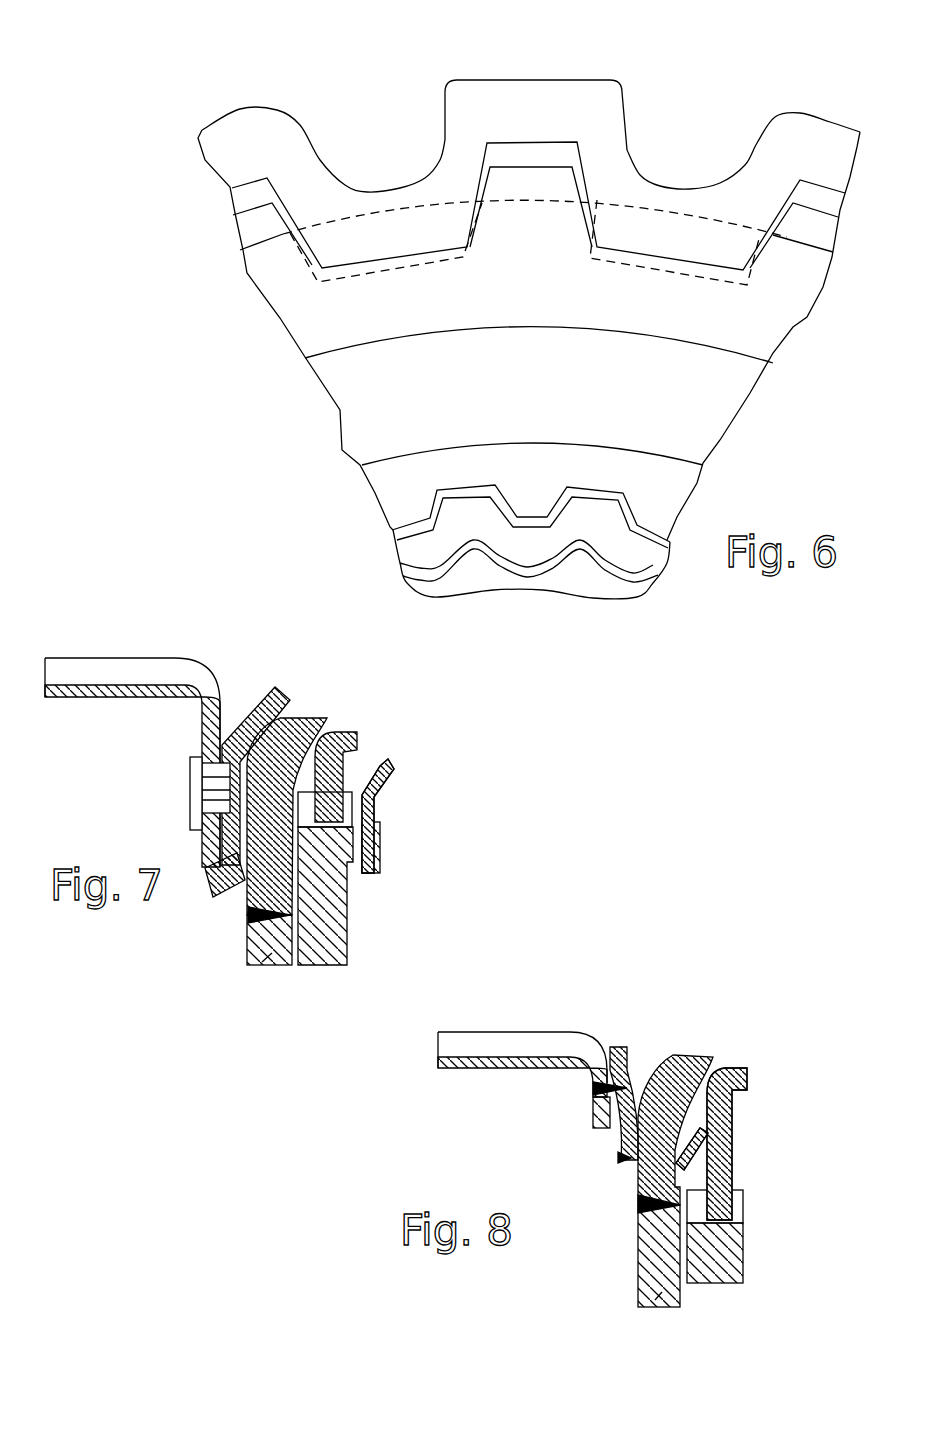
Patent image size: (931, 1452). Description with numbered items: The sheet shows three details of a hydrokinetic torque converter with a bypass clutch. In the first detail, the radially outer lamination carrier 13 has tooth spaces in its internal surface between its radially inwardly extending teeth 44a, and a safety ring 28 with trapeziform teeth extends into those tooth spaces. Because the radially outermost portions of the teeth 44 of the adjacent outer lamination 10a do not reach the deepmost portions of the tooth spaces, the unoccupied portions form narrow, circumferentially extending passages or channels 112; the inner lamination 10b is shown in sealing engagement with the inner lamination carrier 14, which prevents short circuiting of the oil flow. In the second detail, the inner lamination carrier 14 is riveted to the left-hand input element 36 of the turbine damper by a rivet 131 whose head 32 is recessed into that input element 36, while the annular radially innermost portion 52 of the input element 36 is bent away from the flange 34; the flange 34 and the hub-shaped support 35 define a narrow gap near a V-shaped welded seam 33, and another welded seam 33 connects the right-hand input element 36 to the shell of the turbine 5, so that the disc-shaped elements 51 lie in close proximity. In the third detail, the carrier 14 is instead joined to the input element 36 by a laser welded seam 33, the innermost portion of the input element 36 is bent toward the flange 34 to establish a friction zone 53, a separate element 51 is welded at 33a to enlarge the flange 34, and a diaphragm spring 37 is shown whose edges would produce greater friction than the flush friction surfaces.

In FIG. 6, the radially outer lamination carrier 13 is at (530, 95).
In FIG. 6, the teeth 44 is at (530, 187).
In FIG. 6, the radially inwardly extending teeth 44a is at (380, 223).
In FIG. 6, the passages or channels 112 is at (443, 141).
In FIG. 6, the safety ring 28 is at (546, 285).
In FIG. 6, the outer lamination 10a is at (555, 403).
In FIG. 6, the inner lamination 10b is at (555, 487).
In FIG. 6, the inner lamination carrier 14 is at (533, 555).
In FIG. 7, the inner lamination carrier 14 is at (121, 688).
In FIG. 8, the inner lamination carrier 14 is at (512, 1054).
In FIG. 7, the input element 36 is at (260, 707).
In FIG. 8, the input element 36 is at (620, 1047).
In FIG. 7, the flange 34 is at (302, 727).
In FIG. 8, the flange 34 is at (690, 1060).
In FIG. 7, the rivet head 32 is at (232, 783).
In FIG. 7, the rivet 131 is at (212, 793).
In FIG. 7, the turbine 5 is at (375, 799).
In FIG. 7, the welded seam 33 is at (247, 917).
In FIG. 8, the welded seam 33 is at (595, 1092).
In FIG. 8, the weld 33a is at (638, 1203).
In FIG. 7, the hub-shaped support 35 is at (333, 950).
In FIG. 8, the hub-shaped support 35 is at (720, 1268).
In FIG. 7, the disc-shaped elements 51 is at (205, 868).
In FIG. 8, the disc-shaped elements 51 is at (623, 1147).
In FIG. 7, the annular radially innermost portion 52 is at (228, 890).
In FIG. 8, the friction zone 53 is at (620, 1160).
In FIG. 8, the diaphragm spring 37 is at (697, 1155).